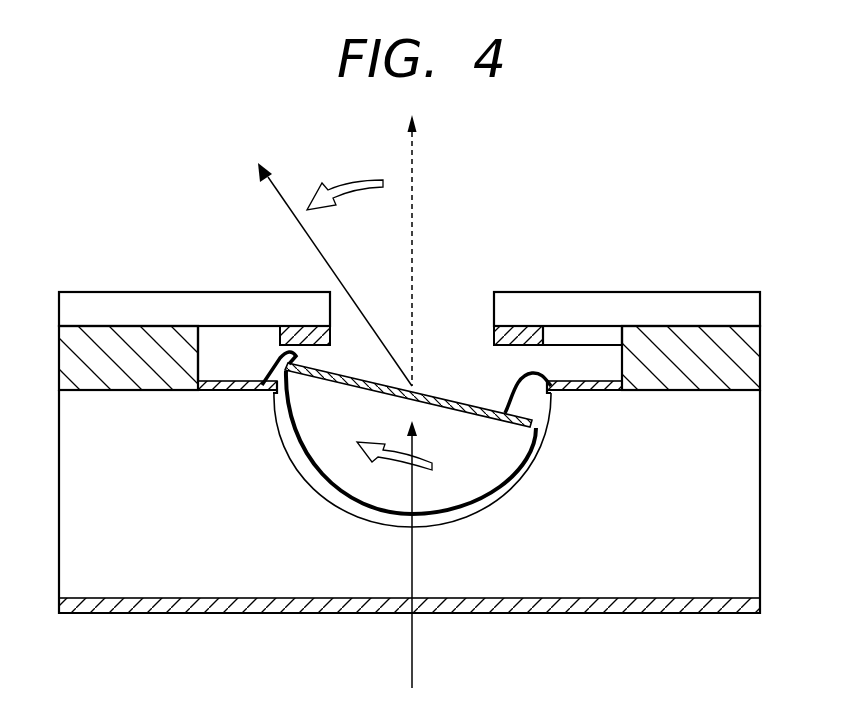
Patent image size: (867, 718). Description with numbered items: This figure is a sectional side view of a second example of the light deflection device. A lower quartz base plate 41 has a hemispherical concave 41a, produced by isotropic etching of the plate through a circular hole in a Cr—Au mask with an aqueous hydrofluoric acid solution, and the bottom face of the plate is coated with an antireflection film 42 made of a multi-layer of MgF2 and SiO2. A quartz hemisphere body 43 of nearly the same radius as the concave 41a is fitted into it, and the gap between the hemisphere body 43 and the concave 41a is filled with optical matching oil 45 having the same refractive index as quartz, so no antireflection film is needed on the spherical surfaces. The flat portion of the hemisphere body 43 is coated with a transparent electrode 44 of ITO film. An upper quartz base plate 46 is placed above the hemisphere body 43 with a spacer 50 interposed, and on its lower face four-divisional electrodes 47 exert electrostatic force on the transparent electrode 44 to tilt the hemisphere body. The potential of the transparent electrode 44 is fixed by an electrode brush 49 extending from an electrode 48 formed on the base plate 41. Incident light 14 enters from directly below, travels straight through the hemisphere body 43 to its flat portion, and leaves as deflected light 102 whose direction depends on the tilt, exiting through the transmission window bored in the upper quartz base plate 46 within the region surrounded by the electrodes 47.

The incident light 14 is at (411, 655).
The deflected light 102 is at (323, 260).
The quartz base plate 41 is at (679, 598).
The hemispherical concave 41a is at (522, 465).
The antireflection film 42 is at (141, 613).
The hemisphere body 43 is at (352, 478).
The transparent electrode 44 is at (440, 397).
The optical matching oil 45 is at (484, 497).
The quartz base plate 46 is at (720, 298).
The four-divisional electrodes 47 is at (522, 342).
The electrode 48 is at (222, 380).
The electrode brush 49 is at (271, 380).
The spacer 50 is at (667, 355).